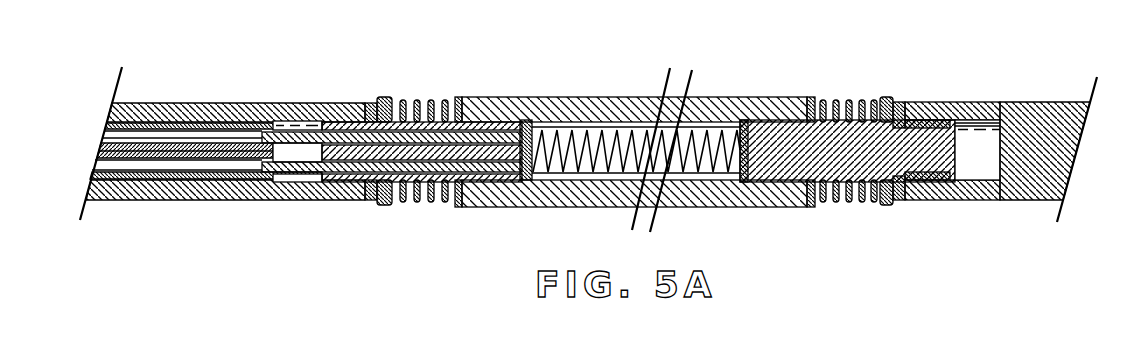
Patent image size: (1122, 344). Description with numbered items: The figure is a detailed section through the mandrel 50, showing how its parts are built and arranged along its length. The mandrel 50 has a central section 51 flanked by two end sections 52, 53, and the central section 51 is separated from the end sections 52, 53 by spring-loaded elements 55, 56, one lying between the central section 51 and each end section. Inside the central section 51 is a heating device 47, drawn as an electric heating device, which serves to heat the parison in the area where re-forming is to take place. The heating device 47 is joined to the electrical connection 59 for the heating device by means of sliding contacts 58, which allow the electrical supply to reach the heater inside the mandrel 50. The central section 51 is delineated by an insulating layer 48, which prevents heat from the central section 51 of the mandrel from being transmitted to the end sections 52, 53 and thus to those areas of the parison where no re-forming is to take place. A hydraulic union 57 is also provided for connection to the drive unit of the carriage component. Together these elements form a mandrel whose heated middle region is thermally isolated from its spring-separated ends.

The heating device 47 is at (617, 140).
The insulating layer 48 is at (458, 98).
The mandrel 50 is at (742, 72).
The central section 51 is at (553, 105).
The end section 52 is at (215, 112).
The end section 53 is at (1018, 127).
The spring-loaded element 55 is at (407, 101).
The spring-loaded element 56 is at (865, 103).
The hydraulic union 57 is at (397, 151).
The sliding contacts 58 is at (300, 162).
The electrical connection 59 is at (847, 151).